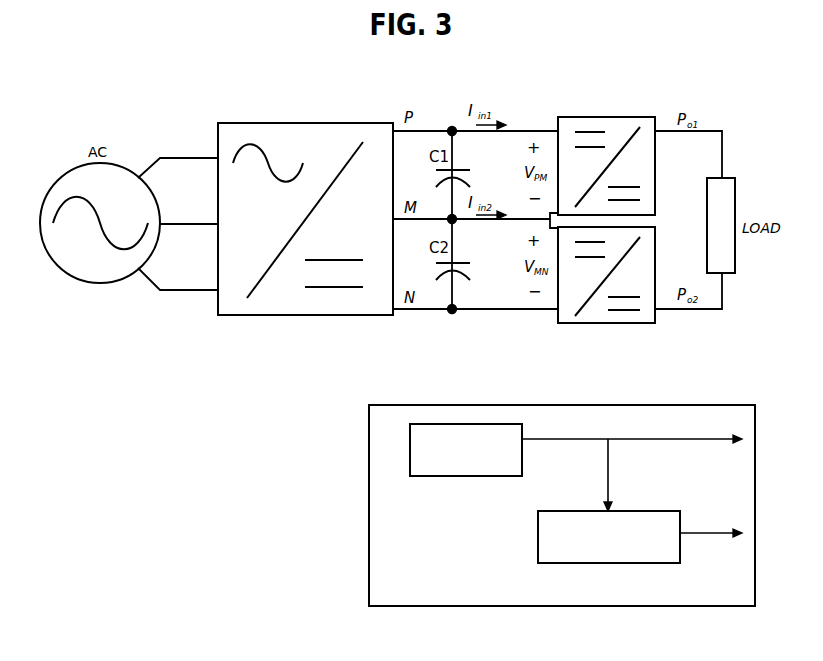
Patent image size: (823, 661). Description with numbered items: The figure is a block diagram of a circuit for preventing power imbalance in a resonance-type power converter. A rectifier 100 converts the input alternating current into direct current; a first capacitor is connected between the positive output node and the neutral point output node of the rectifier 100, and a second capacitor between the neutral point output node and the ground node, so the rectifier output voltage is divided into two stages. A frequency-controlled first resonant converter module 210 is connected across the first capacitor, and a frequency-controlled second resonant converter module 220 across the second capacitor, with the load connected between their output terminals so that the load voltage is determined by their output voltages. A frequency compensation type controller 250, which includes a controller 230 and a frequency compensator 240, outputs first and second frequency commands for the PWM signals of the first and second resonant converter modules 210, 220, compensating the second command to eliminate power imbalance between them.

The rectifier 100 is at (312, 123).
The first resonant converter module 210 is at (608, 117).
The second resonant converter module 220 is at (608, 323).
The controller 230 is at (467, 476).
The frequency compensator 240 is at (638, 511).
The frequency compensation type controller 250 is at (680, 405).